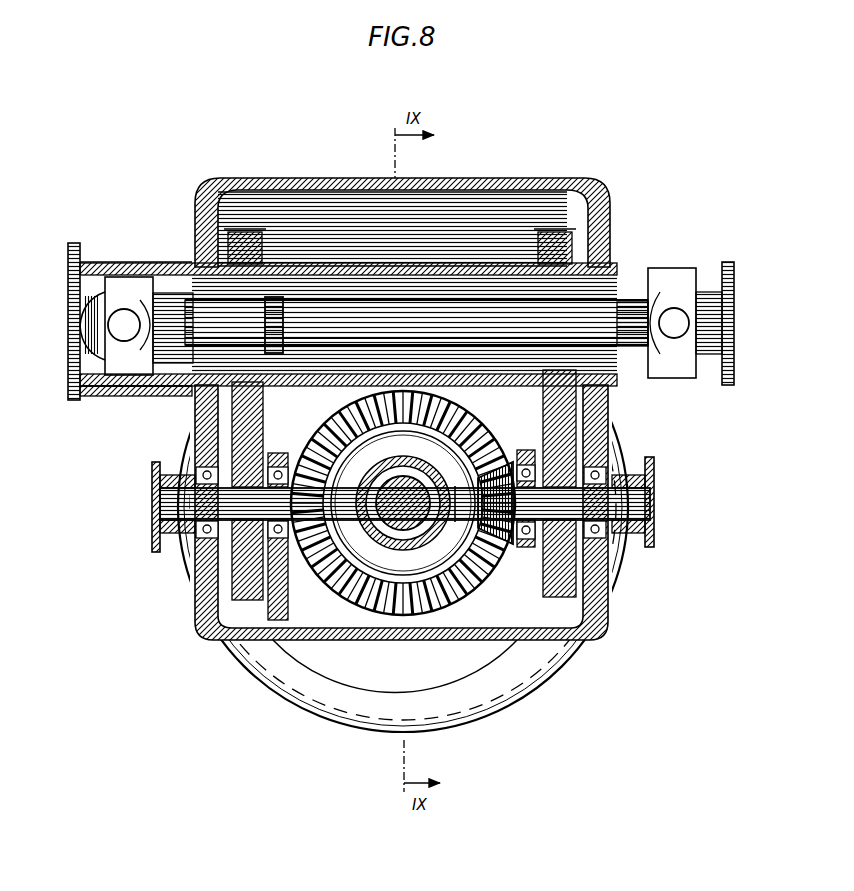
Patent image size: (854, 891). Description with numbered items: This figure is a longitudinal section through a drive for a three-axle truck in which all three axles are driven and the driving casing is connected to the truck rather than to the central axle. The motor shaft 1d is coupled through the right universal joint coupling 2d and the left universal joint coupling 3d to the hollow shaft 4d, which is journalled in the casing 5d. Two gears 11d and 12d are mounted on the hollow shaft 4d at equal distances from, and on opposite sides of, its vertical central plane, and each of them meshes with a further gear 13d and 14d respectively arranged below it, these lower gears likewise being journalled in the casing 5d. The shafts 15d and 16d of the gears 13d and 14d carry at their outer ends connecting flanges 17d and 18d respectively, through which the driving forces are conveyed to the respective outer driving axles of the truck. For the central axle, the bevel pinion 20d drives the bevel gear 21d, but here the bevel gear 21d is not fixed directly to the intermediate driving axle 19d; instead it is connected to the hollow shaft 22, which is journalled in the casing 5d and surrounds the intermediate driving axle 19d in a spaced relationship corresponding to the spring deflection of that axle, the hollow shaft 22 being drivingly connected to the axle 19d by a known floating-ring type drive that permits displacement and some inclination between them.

The motor shaft 1d is at (408, 300).
The right universal joint coupling 2d is at (727, 300).
The left universal joint coupling 3d is at (90, 312).
The hollow shaft 4d is at (304, 386).
The casing 5d is at (597, 213).
The gear 11d is at (260, 236).
The gear 12d is at (538, 243).
The gear 13d is at (233, 583).
The gear 14d is at (578, 583).
The shaft 15d is at (200, 480).
The shaft 16d is at (612, 476).
The connecting flange 17d is at (155, 532).
The connecting flange 18d is at (654, 520).
The intermediate driving axle 19d is at (399, 480).
The bevel pinion 20d is at (508, 462).
The bevel gear 21d is at (322, 574).
The hollow shaft 22 is at (386, 545).